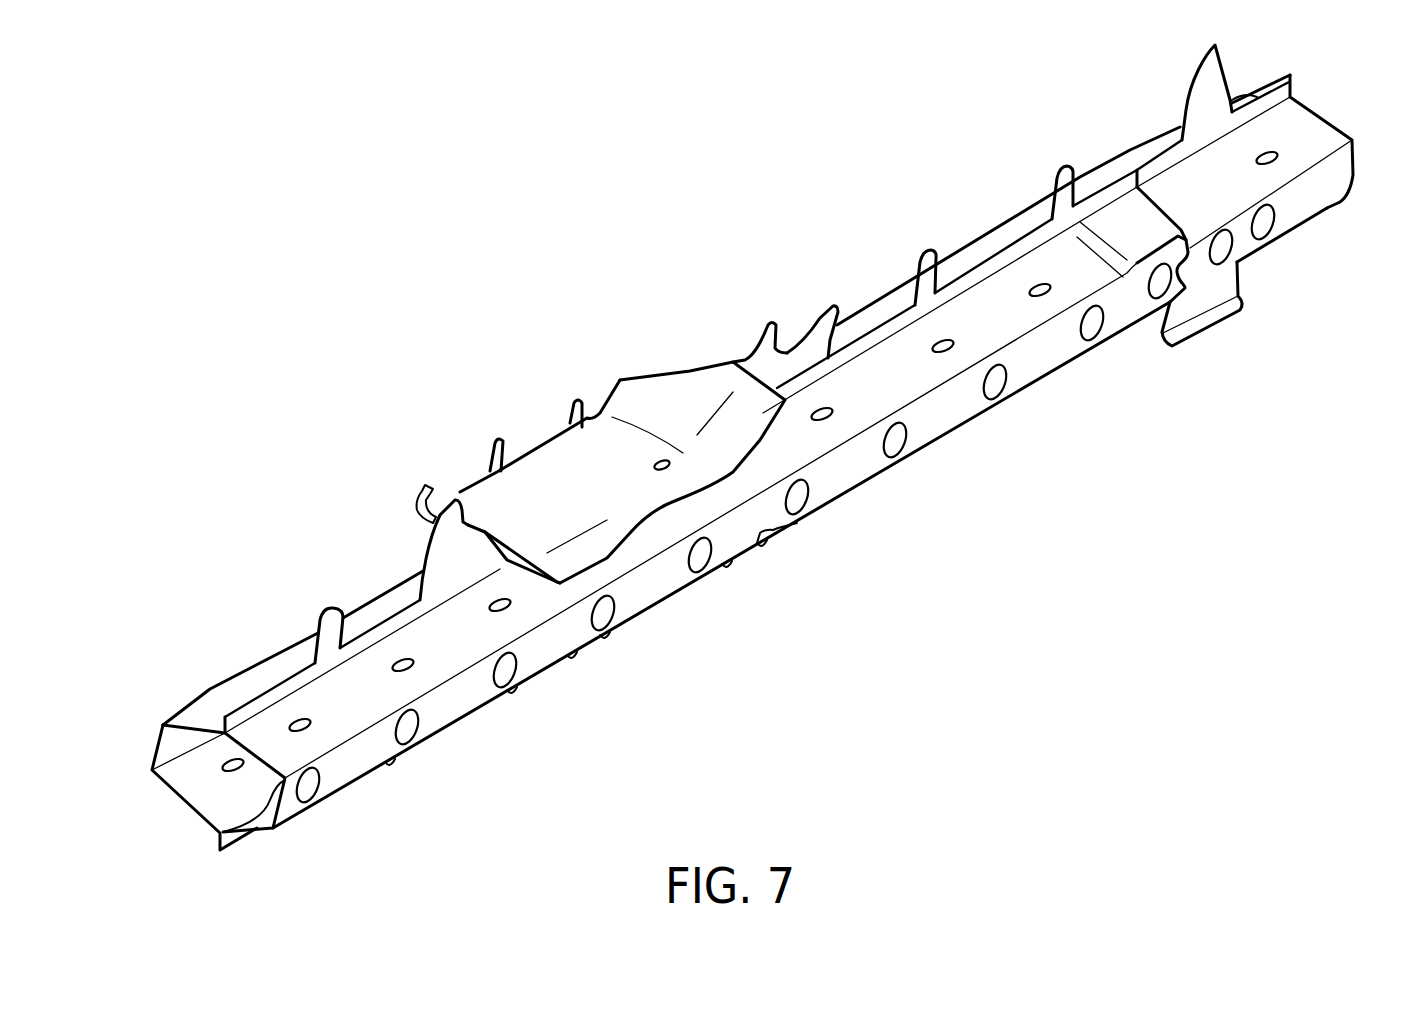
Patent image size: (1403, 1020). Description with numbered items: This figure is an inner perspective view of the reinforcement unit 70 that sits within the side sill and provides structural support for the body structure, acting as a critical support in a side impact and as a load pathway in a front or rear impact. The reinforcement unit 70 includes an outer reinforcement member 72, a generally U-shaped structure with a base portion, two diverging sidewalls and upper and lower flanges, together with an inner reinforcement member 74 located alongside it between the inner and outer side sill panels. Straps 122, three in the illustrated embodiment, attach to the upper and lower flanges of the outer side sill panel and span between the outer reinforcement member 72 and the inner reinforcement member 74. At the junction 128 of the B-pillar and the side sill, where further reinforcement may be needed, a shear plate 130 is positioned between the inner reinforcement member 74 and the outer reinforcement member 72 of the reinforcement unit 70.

The reinforcement unit 70 is at (678, 187).
The outer reinforcement member 72 is at (392, 585).
The inner reinforcement member 74 is at (860, 465).
The strap 122 is at (340, 622).
The junction 128 is at (548, 470).
The shear plate 130 is at (818, 332).